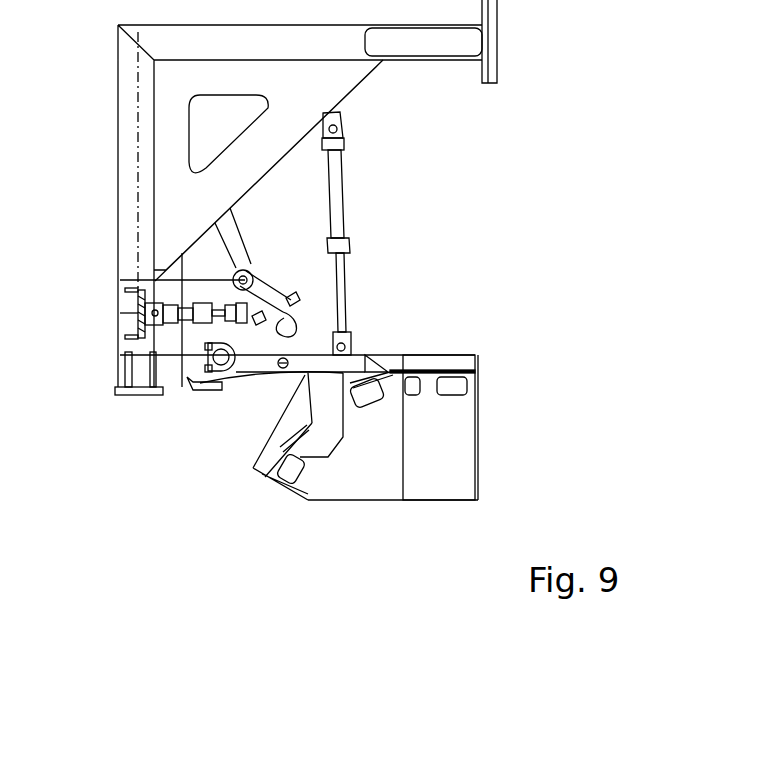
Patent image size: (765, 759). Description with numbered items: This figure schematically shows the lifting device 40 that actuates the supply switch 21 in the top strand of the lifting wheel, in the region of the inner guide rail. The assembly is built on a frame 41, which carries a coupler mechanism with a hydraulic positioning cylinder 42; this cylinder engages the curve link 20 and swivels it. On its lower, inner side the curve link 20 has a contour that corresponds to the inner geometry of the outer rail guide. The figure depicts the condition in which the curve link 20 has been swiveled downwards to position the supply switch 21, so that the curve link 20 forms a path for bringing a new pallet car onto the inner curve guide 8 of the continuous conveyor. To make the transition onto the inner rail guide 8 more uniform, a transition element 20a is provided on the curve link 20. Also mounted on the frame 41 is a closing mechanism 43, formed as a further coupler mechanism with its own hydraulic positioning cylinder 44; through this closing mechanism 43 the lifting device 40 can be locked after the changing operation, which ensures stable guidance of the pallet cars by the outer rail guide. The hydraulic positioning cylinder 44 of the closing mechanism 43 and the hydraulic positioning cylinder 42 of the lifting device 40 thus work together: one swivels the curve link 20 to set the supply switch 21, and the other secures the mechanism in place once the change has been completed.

The inner curve guide 8 is at (447, 358).
The curve link 20 is at (302, 362).
The transition element 20a is at (383, 355).
The supply switch 21 is at (330, 342).
The lifting device 40 is at (455, 156).
The frame 41 is at (135, 113).
The hydraulic positioning cylinder 42 is at (340, 220).
The closing mechanism 43 is at (273, 278).
The hydraulic positioning cylinder 44 is at (190, 318).